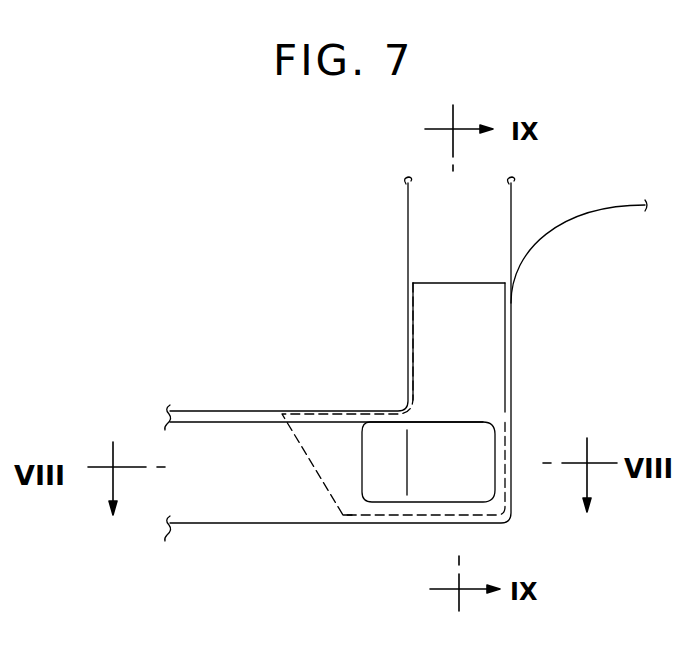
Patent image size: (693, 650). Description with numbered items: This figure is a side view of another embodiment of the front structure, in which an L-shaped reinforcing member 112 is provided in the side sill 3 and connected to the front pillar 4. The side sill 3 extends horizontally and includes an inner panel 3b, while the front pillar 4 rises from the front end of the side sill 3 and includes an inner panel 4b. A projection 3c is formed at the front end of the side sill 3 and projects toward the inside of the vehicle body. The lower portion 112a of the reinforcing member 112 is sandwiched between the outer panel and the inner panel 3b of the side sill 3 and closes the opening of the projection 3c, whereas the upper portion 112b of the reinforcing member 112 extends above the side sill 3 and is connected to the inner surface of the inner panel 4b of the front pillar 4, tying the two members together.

The side sill 3 is at (198, 411).
The inner panel 3b is at (262, 435).
The projection 3c is at (452, 435).
The front pillar 4 is at (408, 223).
The inner panel 4b is at (502, 233).
The reinforcing member 112 is at (513, 357).
The lower portion 112a is at (342, 526).
The upper portion 112b is at (498, 317).